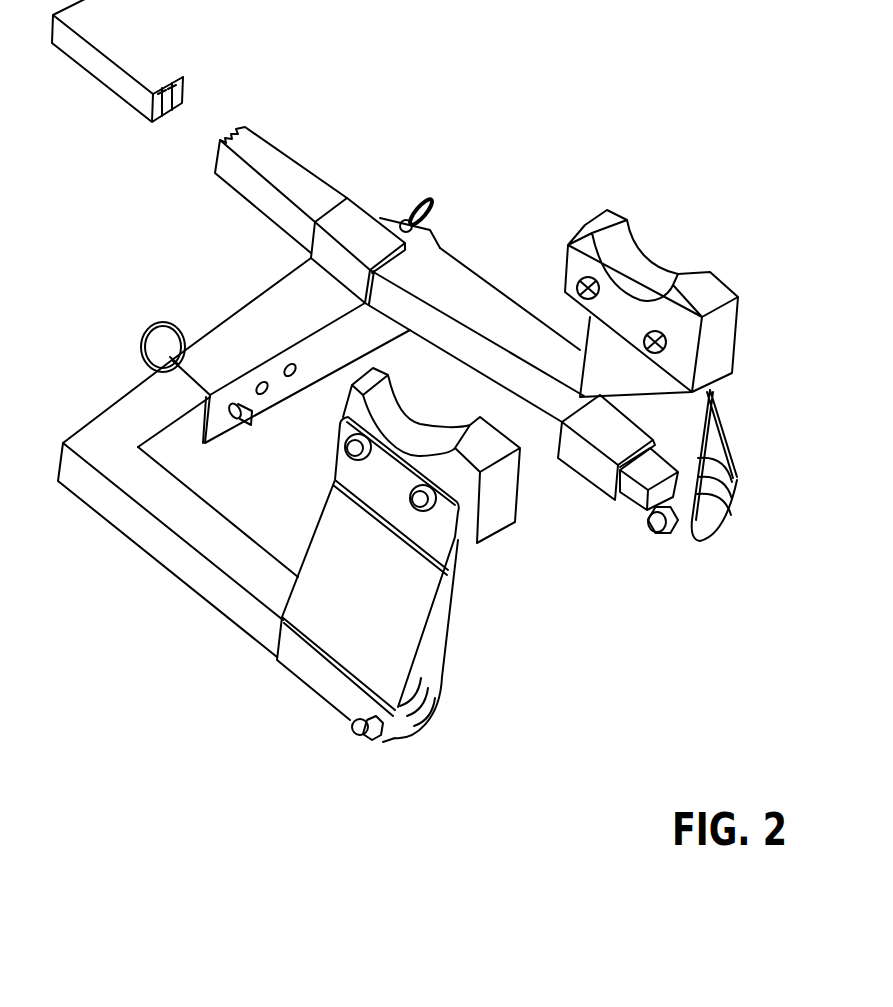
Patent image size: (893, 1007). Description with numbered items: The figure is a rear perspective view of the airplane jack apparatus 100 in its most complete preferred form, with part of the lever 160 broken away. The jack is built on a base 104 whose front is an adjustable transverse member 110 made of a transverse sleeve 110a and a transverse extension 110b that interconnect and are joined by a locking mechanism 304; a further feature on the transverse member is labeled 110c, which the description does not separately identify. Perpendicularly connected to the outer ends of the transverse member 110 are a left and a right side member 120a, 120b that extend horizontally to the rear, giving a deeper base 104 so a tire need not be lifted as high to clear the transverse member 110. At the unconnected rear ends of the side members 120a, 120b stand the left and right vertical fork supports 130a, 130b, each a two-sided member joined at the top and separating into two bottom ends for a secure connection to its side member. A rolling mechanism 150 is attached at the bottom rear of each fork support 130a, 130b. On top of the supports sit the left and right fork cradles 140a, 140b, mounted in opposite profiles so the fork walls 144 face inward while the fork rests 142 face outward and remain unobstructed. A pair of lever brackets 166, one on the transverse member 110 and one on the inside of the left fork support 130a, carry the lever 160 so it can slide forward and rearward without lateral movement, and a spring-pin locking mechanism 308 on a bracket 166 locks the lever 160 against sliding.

The airplane jack apparatus 100 is at (475, 112).
The base 104 is at (155, 633).
The adjustable transverse member 110 is at (180, 300).
The transverse sleeve 110a is at (265, 320).
The transverse extension 110b is at (143, 415).
The frame holes 110c is at (263, 388).
The left side member 120a is at (487, 303).
The right side member 120b is at (153, 537).
The left vertical fork support 130a is at (710, 423).
The right vertical fork support 130b is at (447, 573).
The left fork cradle 140a is at (710, 350).
The right fork cradle 140b is at (492, 518).
The fork rest 142 is at (625, 243).
The fork wall 144 is at (635, 292).
The rolling mechanism 150 is at (707, 525).
The lever 160 is at (263, 163).
The lever bracket 166 is at (353, 223).
The locking mechanism 304 is at (147, 327).
The locking mechanism (spring pin) 308 is at (432, 200).